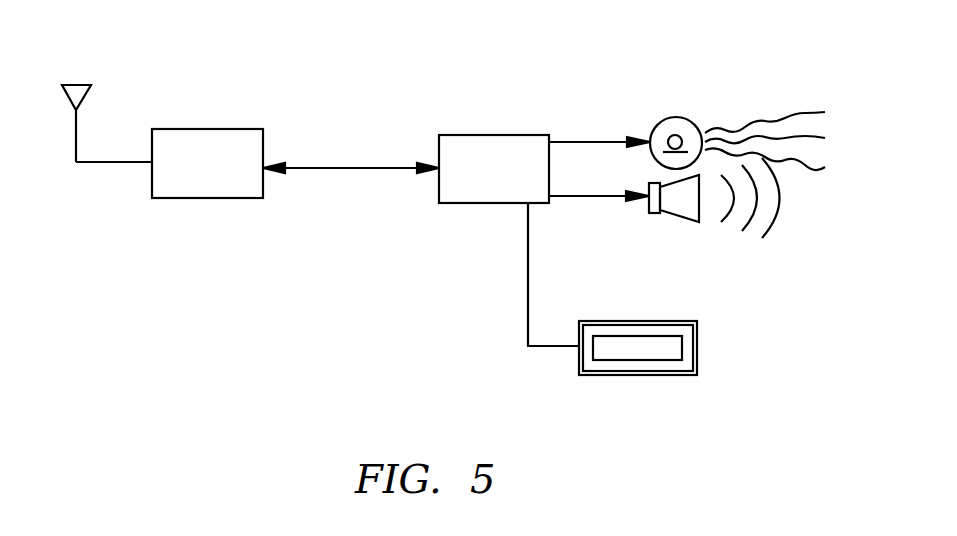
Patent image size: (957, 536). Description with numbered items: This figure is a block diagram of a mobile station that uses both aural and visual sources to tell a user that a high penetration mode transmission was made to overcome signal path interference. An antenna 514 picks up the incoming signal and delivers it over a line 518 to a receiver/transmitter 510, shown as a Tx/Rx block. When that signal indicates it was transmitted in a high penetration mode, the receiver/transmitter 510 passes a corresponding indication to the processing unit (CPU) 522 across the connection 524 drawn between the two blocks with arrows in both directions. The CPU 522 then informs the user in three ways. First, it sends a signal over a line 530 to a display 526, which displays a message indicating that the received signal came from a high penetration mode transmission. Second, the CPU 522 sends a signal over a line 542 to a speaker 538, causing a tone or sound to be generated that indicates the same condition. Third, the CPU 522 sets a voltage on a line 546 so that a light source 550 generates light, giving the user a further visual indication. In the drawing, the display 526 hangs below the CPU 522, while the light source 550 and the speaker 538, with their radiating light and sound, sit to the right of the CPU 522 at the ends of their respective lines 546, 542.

The receiver/transmitter (Rx/Tx) 510 is at (175, 190).
The antenna 514 is at (77, 85).
The line 518 is at (113, 162).
The processing unit (CPU) 522 is at (457, 188).
The bidirectional data bus 524 is at (348, 168).
The display 526 is at (637, 375).
The line 530 is at (528, 273).
The speaker 538 is at (673, 215).
The line 542 is at (580, 196).
The line 546 is at (583, 140).
The light source 550 is at (677, 118).